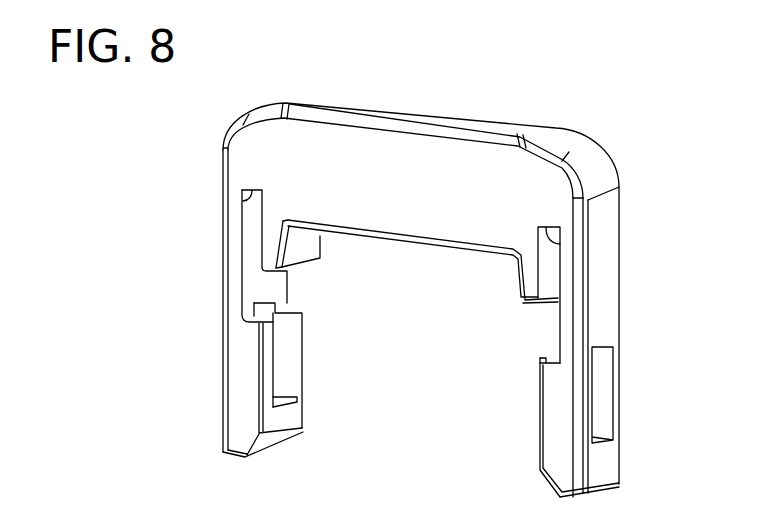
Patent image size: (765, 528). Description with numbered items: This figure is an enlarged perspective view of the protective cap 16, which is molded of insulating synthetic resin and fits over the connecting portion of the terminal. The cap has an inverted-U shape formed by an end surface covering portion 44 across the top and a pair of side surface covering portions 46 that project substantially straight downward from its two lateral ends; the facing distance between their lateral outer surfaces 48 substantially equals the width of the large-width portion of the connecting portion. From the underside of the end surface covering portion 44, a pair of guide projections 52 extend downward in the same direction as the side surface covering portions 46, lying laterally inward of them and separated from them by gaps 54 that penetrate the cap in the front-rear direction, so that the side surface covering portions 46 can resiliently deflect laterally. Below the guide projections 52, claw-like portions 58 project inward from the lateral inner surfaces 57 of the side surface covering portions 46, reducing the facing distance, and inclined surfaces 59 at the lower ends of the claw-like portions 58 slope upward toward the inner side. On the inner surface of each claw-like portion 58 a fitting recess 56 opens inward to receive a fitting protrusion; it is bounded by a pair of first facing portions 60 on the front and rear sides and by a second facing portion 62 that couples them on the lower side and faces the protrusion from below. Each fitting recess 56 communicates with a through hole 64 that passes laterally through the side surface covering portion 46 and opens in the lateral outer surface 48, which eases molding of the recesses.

The protective cap 16 is at (622, 115).
The end surface covering portion 44 is at (402, 178).
The side surface covering portion 46 is at (219, 221).
The lateral outer surface 48 is at (604, 291).
The guide projection 52 is at (310, 248).
The gap 54 is at (245, 202).
The fitting recess 56 is at (294, 345).
The lateral inner surface 57 is at (252, 237).
The claw-like portion 58 is at (311, 431).
The inclined surface 59 is at (278, 447).
The first facing portion 60 is at (250, 379).
The second facing portion 62 is at (288, 413).
The through hole 64 is at (600, 360).